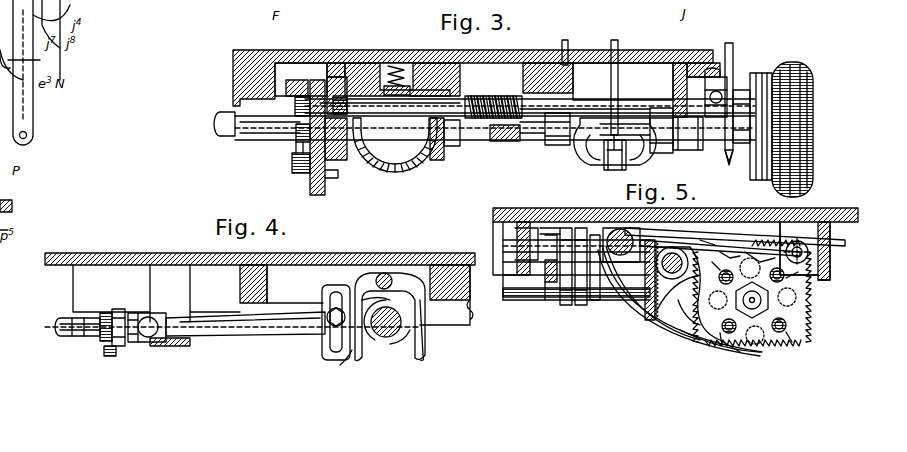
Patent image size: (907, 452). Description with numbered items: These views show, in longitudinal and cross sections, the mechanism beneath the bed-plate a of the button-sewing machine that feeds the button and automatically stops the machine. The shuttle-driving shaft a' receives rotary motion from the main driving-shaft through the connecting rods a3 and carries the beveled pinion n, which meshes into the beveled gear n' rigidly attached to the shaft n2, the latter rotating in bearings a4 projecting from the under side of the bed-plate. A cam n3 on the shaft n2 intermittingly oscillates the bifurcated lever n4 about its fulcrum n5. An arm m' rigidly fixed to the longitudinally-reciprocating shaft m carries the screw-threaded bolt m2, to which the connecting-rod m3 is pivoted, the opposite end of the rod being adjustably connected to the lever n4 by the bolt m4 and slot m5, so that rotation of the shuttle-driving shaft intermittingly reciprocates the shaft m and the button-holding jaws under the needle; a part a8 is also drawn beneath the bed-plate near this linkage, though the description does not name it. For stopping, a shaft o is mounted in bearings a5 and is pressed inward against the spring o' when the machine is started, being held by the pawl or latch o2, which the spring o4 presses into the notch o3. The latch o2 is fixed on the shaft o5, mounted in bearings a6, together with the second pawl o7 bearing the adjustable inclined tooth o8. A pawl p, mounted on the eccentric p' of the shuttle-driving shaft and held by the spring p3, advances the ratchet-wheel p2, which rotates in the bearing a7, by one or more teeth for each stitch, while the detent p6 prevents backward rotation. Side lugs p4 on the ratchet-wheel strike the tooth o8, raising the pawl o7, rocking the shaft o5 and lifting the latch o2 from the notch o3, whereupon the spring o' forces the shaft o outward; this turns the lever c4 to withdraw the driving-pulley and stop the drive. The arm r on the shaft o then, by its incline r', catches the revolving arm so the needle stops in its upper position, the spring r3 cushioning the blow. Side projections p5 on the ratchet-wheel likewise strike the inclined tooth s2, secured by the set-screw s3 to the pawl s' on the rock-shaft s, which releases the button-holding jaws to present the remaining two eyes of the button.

In FIG. 3, the bed-plate a is at (476, 73).
In FIG. 4, the bed-plate a is at (260, 279).
In FIG. 5, the bed-plate a is at (675, 246).
In FIG. 3, the shuttle-driving shaft a' is at (477, 131).
In FIG. 5, the shuttle-driving shaft a' is at (672, 263).
In FIG. 3, the connecting rods a3 is at (568, 44).
In FIG. 5, the bearings a4 is at (515, 300).
In FIG. 3, the bearings a5 is at (360, 78).
In FIG. 5, the bearings a5 is at (752, 230).
In FIG. 5, the bearings a6 is at (800, 232).
In FIG. 3, the bearing a7 is at (340, 160).
In FIG. 4, the pad a8 is at (182, 347).
In FIG. 3, the shaft o is at (530, 96).
In FIG. 3, the spring o' is at (493, 92).
In FIG. 3, the pawl or latch o2 is at (396, 64).
In FIG. 3, the notch o3 is at (425, 92).
In FIG. 3, the spring o4 is at (400, 88).
In FIG. 5, the shaft o5 is at (810, 252).
In FIG. 3, the second pawl o7 is at (337, 78).
In FIG. 5, the second pawl o7 is at (765, 235).
In FIG. 3, the inclined tooth o8 is at (340, 97).
In FIG. 5, the inclined tooth o8 is at (760, 240).
In FIG. 5, the rock-shaft s is at (621, 226).
In FIG. 3, the pawl s' is at (304, 61).
In FIG. 5, the pawl s' is at (709, 235).
In FIG. 3, the inclined tooth s2 is at (296, 100).
In FIG. 5, the inclined tooth s2 is at (760, 257).
In FIG. 5, the set-screw s3 is at (725, 252).
In FIG. 3, the pawl p is at (317, 137).
In FIG. 5, the pawl p is at (697, 299).
In FIG. 5, the eccentric p' is at (669, 344).
In FIG. 5, the ratchet-wheel p2 is at (812, 312).
In FIG. 5, the spring p3 is at (697, 350).
In FIG. 3, the side lugs or projections p4 is at (338, 178).
In FIG. 5, the side lugs or projections p4 is at (766, 372).
In FIG. 3, the side projections p5 is at (297, 130).
In FIG. 5, the side projections p5 is at (852, 266).
In FIG. 5, the detent p6 is at (688, 330).
In FIG. 3, the beveled pinion n is at (437, 145).
In FIG. 5, the beveled pinion n is at (706, 239).
In FIG. 3, the beveled gear n' is at (395, 153).
In FIG. 5, the beveled gear n' is at (680, 300).
In FIG. 4, the shaft n2 is at (381, 336).
In FIG. 4, the cam n3 is at (395, 358).
In FIG. 4, the bifurcated lever n4 is at (352, 360).
In FIG. 5, the bifurcated lever n4 is at (566, 305).
In FIG. 4, the fulcrum n5 is at (386, 273).
In FIG. 5, the fulcrum n5 is at (538, 230).
In FIG. 4, the longitudinally-reciprocating shaft m is at (230, 327).
In FIG. 4, the arm m' is at (91, 344).
In FIG. 4, the screw-threaded bolt m2 is at (128, 342).
In FIG. 4, the connecting-rod m3 is at (262, 335).
In FIG. 5, the connecting-rod m3 is at (548, 283).
In FIG. 4, the bolt m4 is at (326, 310).
In FIG. 5, the bolt m4 is at (595, 300).
In FIG. 4, the slot m5 is at (336, 352).
In FIG. 3, the arm r is at (722, 117).
In FIG. 3, the incline r' is at (735, 157).
In FIG. 3, the spring r3 is at (714, 66).
In FIG. 3, the lever c4 is at (733, 55).